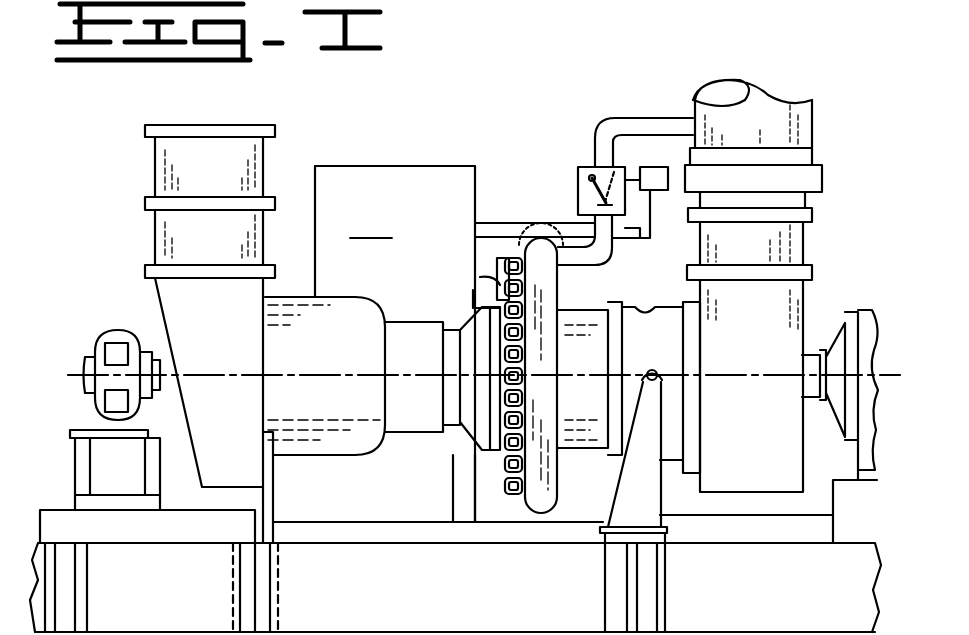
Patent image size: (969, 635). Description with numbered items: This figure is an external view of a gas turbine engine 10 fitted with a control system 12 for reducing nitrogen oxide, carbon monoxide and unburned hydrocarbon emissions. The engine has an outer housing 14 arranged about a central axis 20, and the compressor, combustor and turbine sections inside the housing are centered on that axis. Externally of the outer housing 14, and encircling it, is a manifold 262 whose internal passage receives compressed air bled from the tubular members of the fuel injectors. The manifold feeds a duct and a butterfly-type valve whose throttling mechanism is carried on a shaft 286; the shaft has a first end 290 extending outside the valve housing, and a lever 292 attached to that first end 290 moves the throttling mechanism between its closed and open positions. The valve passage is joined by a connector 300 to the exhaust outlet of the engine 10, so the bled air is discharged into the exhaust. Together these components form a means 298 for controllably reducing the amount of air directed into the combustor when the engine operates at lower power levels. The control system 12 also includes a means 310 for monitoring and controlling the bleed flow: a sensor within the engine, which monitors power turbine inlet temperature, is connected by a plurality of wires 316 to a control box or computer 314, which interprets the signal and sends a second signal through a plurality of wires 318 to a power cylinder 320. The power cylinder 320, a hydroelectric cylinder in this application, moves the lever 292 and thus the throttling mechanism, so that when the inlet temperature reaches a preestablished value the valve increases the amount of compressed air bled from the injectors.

The gas turbine engine 10 is at (646, 66).
The control system 12 is at (515, 122).
The outer housing 14 is at (572, 450).
The central axis 20 is at (236, 375).
The manifold 262 is at (541, 513).
The shaft 286 is at (592, 190).
The first end 290 is at (585, 205).
The lever 292 is at (590, 178).
The means for controllably reducing 298 is at (397, 124).
The connector 300 is at (615, 118).
The means for monitoring and controlling 310 is at (374, 153).
The control box 314 is at (371, 226).
The wires 316 is at (480, 277).
The wires 318 is at (475, 237).
The power cylinder 320 is at (655, 165).